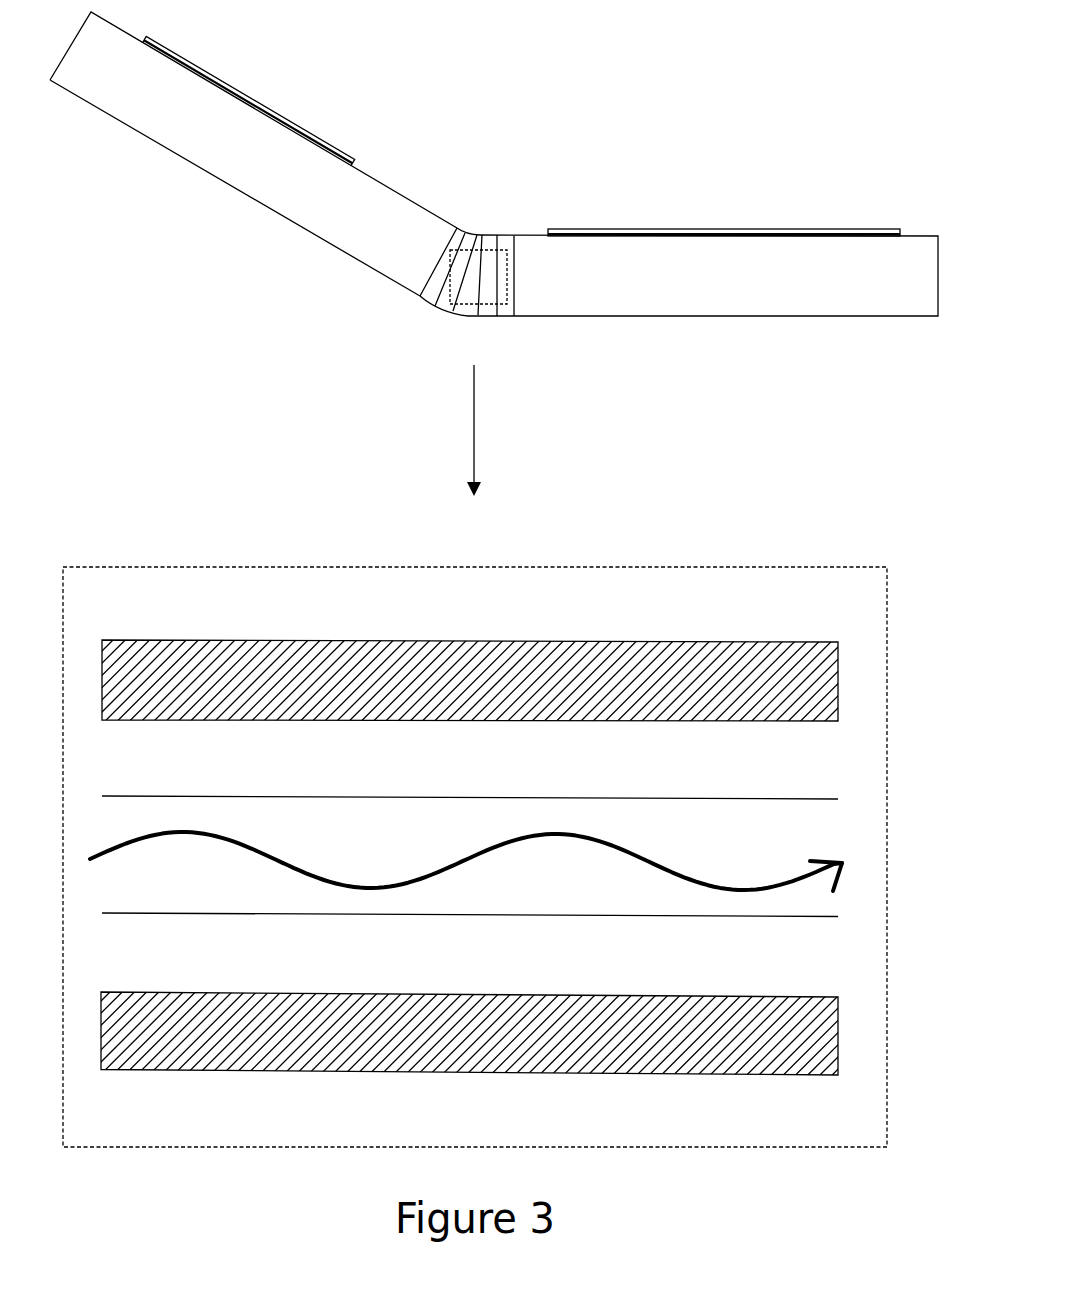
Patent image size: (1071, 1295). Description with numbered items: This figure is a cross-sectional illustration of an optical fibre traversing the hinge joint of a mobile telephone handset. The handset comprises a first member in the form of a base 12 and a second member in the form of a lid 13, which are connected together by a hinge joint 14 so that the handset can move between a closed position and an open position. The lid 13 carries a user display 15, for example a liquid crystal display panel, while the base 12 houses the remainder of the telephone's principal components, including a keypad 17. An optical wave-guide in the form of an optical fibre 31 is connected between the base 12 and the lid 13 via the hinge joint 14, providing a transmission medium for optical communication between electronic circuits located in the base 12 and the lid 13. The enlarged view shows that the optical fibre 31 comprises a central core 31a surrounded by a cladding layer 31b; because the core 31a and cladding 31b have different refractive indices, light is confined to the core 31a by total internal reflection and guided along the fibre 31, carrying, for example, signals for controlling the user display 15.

The base 12 is at (703, 275).
The lid 13 is at (253, 154).
The hinge joint 14 is at (487, 240).
The user display 15 is at (272, 80).
The keypad 17 is at (720, 212).
The optical fibre 31 is at (466, 856).
The central core 31a is at (802, 1090).
The cladding layer 31b is at (807, 630).